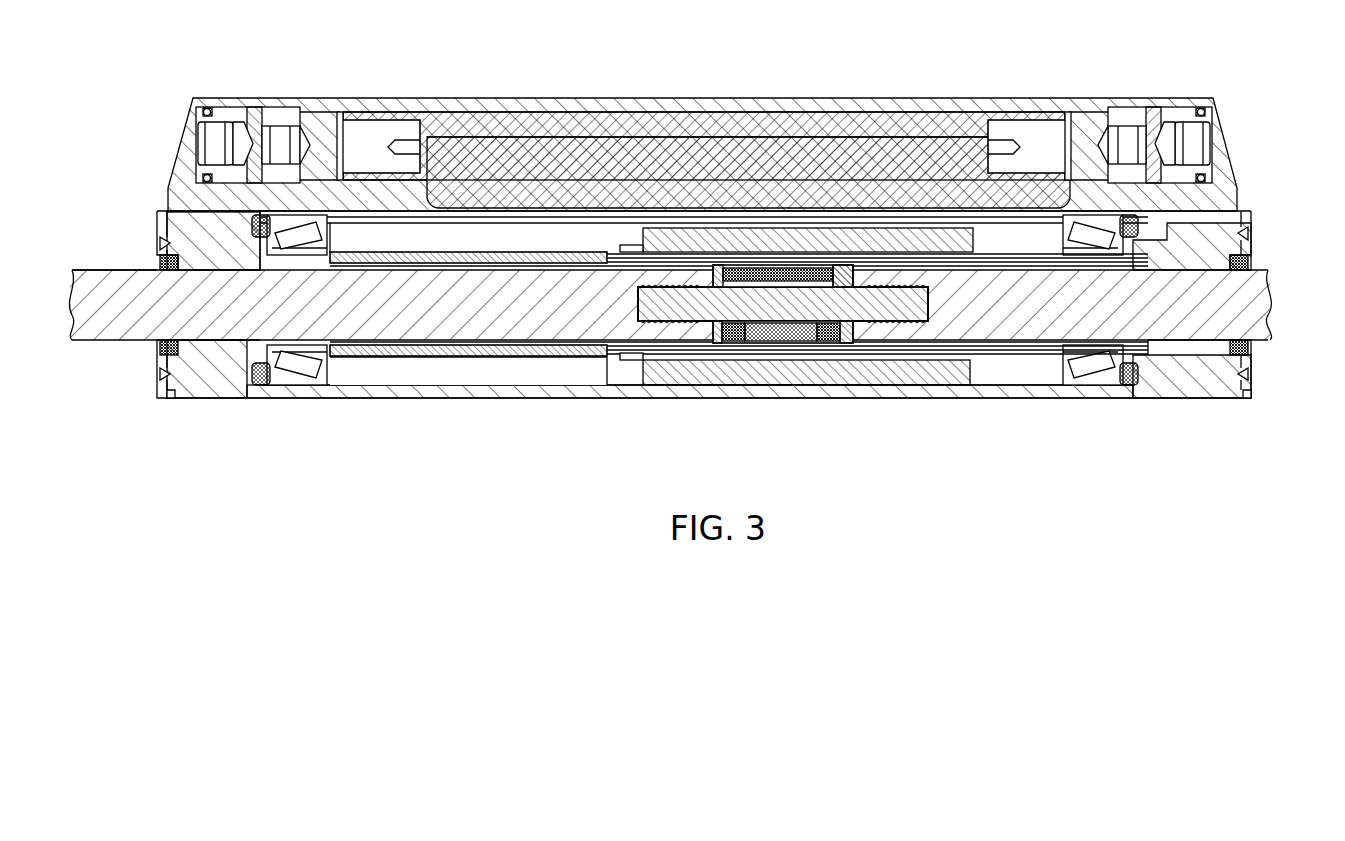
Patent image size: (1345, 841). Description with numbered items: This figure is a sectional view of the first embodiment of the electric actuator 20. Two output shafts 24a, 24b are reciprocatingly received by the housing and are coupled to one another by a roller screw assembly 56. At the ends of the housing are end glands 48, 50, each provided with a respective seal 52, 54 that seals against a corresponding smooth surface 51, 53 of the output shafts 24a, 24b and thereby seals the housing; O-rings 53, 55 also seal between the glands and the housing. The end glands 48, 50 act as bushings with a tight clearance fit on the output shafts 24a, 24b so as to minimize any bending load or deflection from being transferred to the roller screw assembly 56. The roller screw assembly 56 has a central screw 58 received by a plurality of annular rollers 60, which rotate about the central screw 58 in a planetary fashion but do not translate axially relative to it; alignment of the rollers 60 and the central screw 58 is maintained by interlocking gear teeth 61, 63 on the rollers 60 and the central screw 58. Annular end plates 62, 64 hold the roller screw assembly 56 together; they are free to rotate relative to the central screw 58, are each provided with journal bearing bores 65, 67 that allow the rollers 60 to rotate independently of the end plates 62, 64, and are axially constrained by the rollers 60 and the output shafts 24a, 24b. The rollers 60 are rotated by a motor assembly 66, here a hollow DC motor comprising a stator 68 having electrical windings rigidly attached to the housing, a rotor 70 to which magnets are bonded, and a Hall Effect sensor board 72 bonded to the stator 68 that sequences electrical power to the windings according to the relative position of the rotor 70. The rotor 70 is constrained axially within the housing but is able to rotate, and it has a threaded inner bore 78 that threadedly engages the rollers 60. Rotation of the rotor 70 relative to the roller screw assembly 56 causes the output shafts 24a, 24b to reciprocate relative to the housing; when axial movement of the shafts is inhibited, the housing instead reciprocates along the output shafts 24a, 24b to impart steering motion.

The electric actuator 20 is at (144, 80).
The output shaft 24a is at (91, 330).
The output shaft 24b is at (1281, 300).
The end gland 48 is at (195, 246).
The end gland 50 is at (1238, 240).
The smooth surface 51 is at (119, 262).
The seal 52 is at (183, 347).
The smooth surface / O-ring 53 is at (1262, 270).
The seal 54 is at (1249, 347).
The O-ring 55 is at (1245, 399).
The roller screw assembly 56 is at (708, 246).
The central screw 58 is at (893, 306).
The annular rollers 60 is at (790, 344).
The gear teeth 61 is at (772, 344).
The end plate 62 is at (721, 344).
The gear teeth 63 is at (810, 318).
The end plate 64 is at (849, 346).
The journal bearing bore 65 is at (705, 288).
The motor assembly 66 is at (620, 326).
The journal bearing bore 67 is at (865, 290).
The stator 68 is at (683, 372).
The rotor 70 is at (425, 352).
The Hall Effect sensor board 72 is at (658, 356).
The threaded inner bore 78 is at (954, 328).